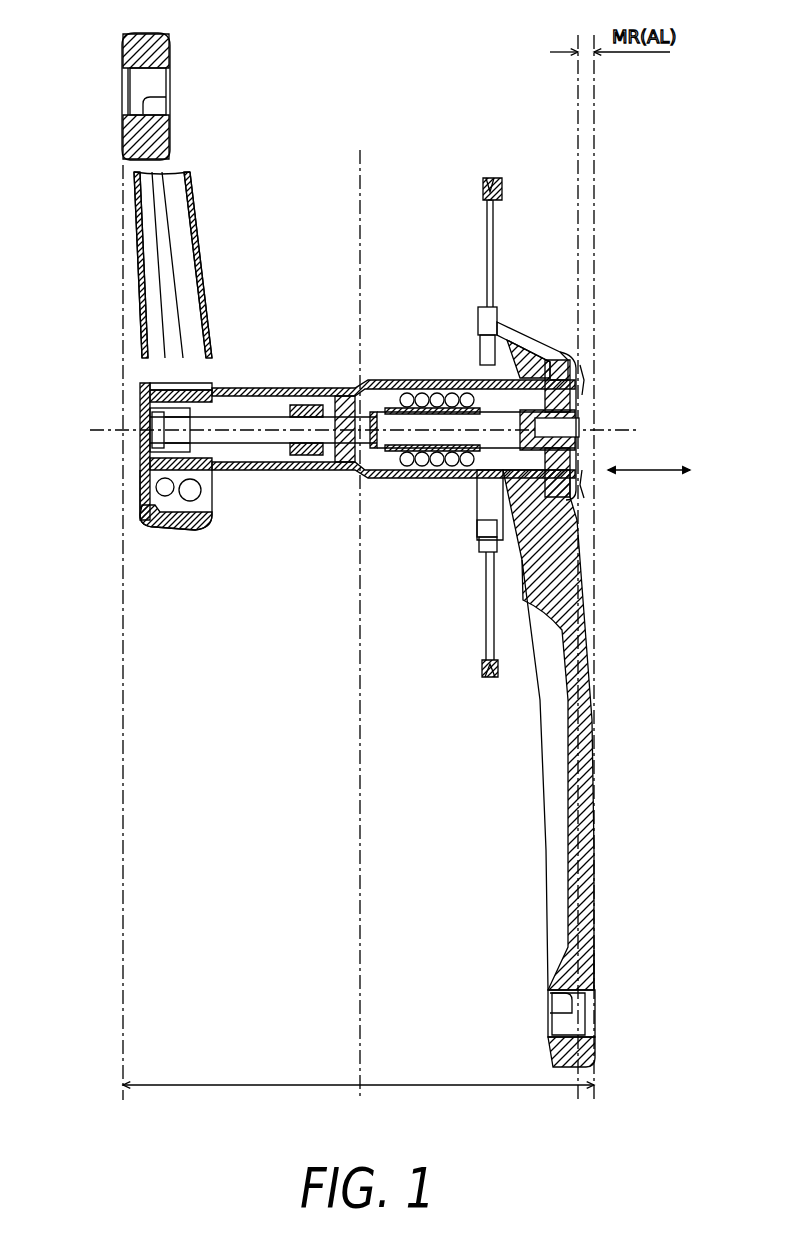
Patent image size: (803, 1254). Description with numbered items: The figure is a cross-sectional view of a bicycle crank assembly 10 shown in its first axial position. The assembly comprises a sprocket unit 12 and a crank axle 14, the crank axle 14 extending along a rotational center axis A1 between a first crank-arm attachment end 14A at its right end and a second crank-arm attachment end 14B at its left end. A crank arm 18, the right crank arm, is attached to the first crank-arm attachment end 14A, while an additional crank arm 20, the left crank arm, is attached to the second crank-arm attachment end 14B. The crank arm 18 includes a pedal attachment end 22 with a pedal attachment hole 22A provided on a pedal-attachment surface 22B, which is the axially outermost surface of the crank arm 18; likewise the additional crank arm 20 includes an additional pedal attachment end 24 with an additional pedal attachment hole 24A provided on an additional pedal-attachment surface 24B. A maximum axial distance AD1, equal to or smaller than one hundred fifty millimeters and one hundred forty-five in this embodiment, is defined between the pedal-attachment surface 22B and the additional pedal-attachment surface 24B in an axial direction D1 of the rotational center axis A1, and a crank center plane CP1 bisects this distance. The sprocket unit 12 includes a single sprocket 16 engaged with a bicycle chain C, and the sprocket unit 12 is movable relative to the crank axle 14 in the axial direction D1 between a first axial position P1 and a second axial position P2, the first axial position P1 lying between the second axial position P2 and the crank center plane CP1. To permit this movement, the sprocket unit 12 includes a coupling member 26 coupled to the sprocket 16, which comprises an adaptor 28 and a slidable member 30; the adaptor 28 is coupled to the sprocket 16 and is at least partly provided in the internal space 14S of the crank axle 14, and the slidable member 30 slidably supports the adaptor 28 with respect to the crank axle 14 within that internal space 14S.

The bicycle crank assembly 10 is at (622, 280).
The sprocket unit 12 is at (473, 232).
The crank axle 14 is at (283, 388).
The first crank-arm attachment end 14A is at (548, 356).
The second crank-arm attachment end 14B is at (140, 388).
The internal space 14S is at (329, 403).
The sprocket 16 is at (478, 250).
The crank arm 18 is at (543, 903).
The additional crank arm 20 is at (205, 240).
The pedal attachment end 22 is at (555, 1052).
The pedal attachment hole 22A is at (572, 1010).
The pedal-attachment surface 22B is at (596, 970).
The additional pedal attachment end 24 is at (160, 50).
The additional pedal attachment hole 24A is at (152, 100).
The additional pedal-attachment surface 24B is at (124, 132).
The coupling member 26 is at (453, 300).
The adaptor 28 is at (476, 320).
The slidable member 30 is at (418, 388).
The rotational center axis A1 is at (626, 428).
The bicycle chain C is at (502, 183).
The crank center plane CP1 is at (358, 165).
The first axial position P1 is at (577, 88).
The second axial position P2 is at (596, 88).
The axial direction D1 is at (648, 478).
The maximum axial distance AD1 is at (358, 1070).